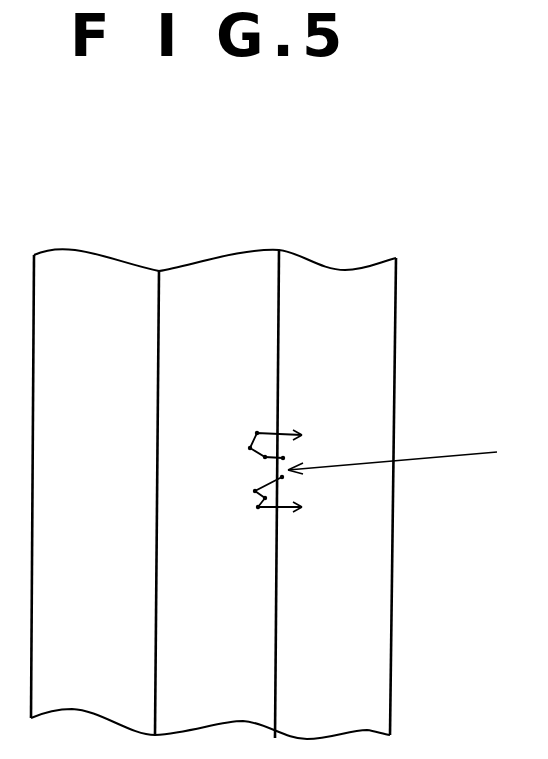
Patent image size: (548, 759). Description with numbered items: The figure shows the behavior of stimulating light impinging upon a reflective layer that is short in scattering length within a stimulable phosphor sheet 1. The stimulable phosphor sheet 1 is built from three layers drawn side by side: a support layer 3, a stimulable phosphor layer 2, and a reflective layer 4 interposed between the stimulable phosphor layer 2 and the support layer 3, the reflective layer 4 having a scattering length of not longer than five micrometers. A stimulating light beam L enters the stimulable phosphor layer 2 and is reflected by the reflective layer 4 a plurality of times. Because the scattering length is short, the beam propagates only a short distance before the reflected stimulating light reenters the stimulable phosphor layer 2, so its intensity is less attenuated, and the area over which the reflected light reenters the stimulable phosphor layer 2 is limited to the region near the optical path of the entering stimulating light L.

The stimulable phosphor sheet 1 is at (368, 172).
The stimulable phosphor layer 2 is at (336, 272).
The support layer 3 is at (86, 262).
The reflective layer 4 is at (222, 268).
The stimulating light beam L is at (449, 457).